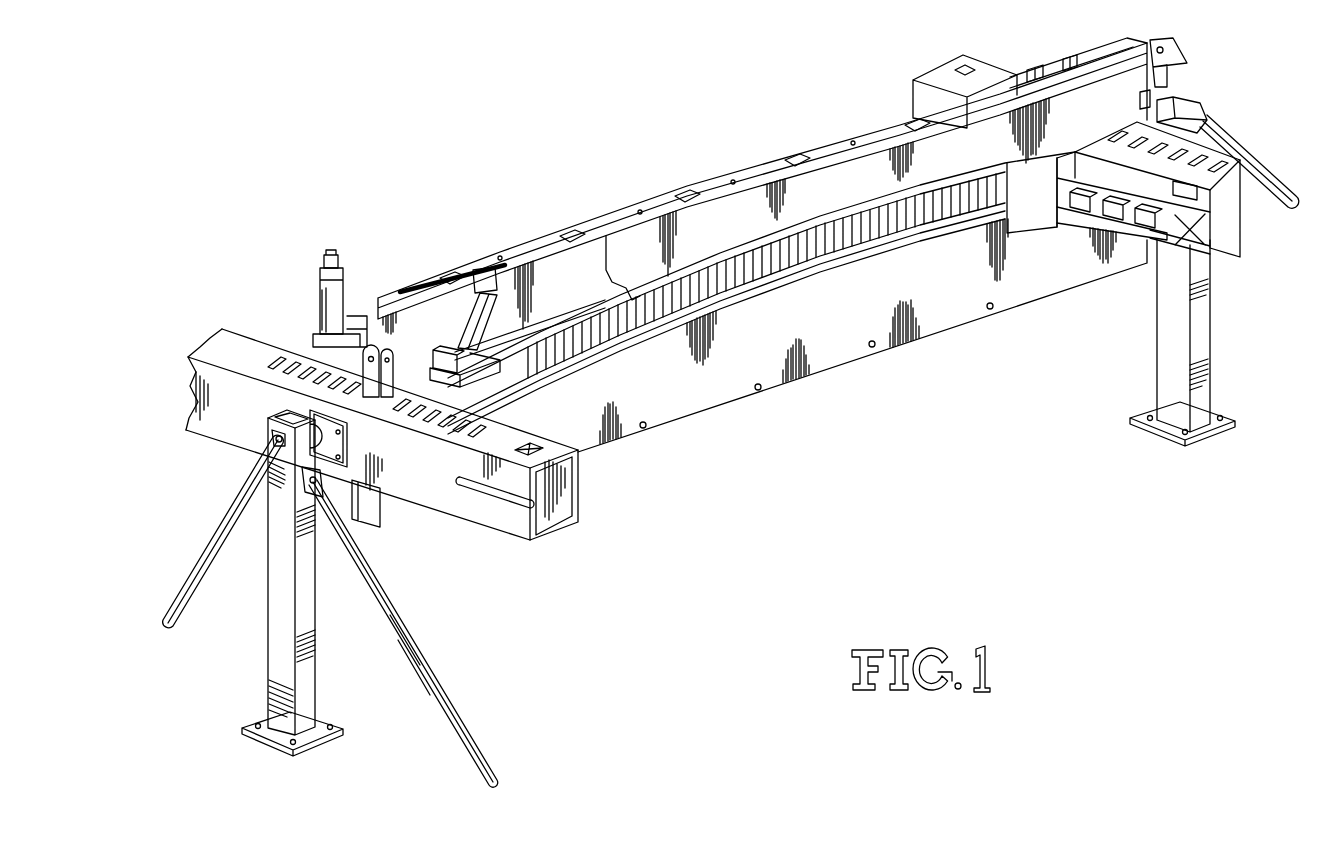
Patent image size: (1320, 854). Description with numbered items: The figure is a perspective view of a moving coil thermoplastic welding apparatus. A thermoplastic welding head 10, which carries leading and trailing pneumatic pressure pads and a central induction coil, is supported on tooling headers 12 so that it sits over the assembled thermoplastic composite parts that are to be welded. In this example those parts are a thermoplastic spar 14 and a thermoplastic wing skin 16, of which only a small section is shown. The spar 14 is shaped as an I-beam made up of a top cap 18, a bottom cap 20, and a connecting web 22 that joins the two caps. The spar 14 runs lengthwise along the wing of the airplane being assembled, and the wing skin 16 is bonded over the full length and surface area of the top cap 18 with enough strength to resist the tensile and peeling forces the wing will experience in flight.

The thermoplastic welding head 10 is at (451, 335).
The tooling headers 12 is at (833, 138).
The thermoplastic spar 14 is at (875, 238).
The thermoplastic wing skin 16 is at (634, 296).
The top cap 18 is at (560, 307).
The bottom cap 20 is at (1053, 230).
The connecting web 22 is at (1046, 211).